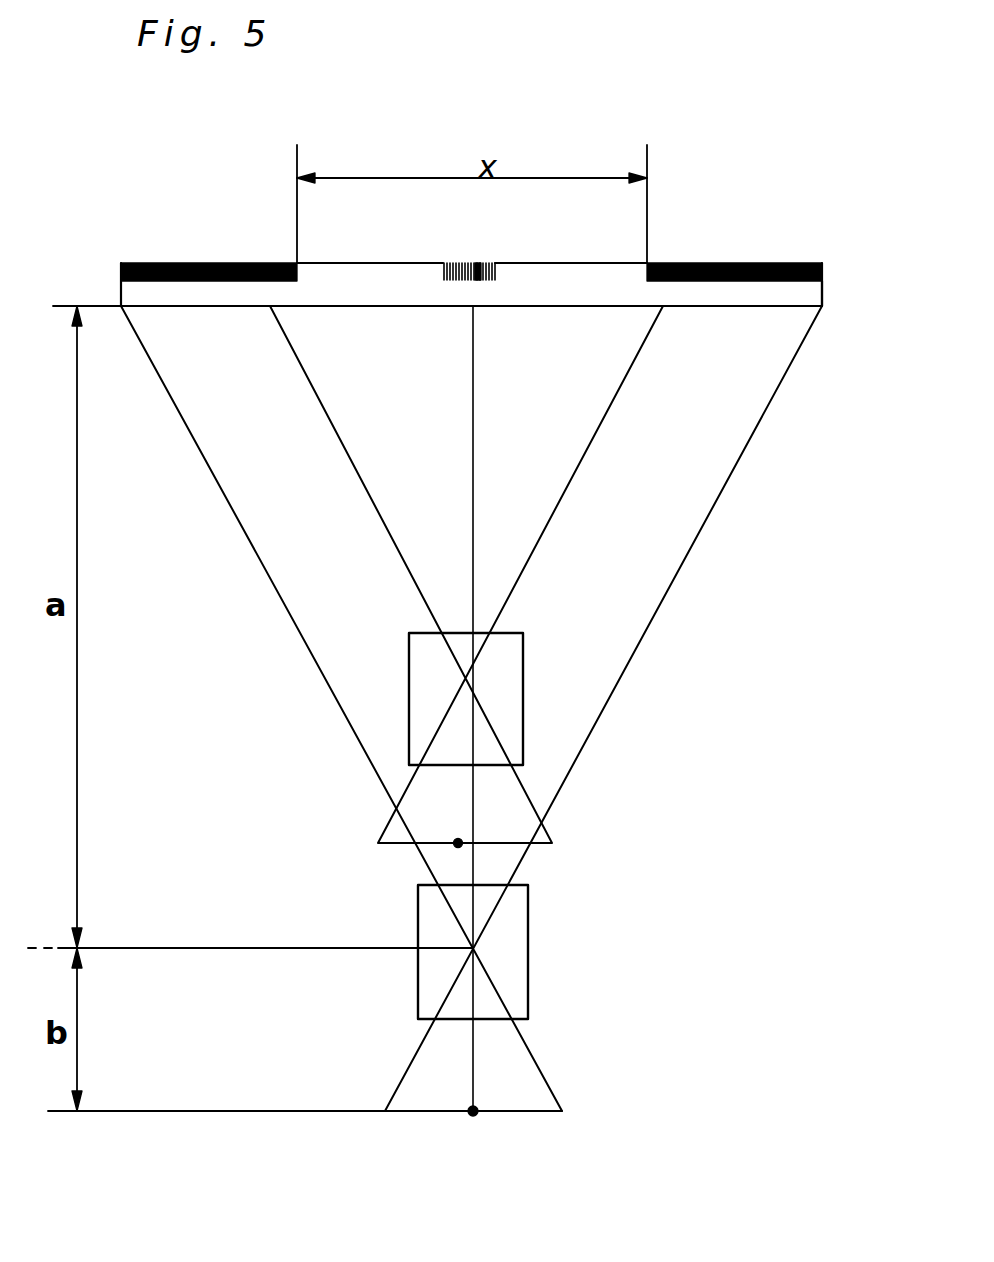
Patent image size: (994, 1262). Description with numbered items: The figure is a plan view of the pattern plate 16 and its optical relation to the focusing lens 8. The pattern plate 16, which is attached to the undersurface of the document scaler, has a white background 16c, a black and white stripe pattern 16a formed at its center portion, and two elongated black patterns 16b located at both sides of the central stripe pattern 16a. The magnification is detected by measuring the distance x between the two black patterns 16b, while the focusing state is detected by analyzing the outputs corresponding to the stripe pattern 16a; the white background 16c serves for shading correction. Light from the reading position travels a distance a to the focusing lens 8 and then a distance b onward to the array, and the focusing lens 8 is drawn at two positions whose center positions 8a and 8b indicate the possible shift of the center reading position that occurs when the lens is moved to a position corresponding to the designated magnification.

The pattern plate 16 is at (138, 233).
The stripe pattern 16a is at (477, 262).
The elongated black patterns 16b is at (213, 263).
The white background 16c is at (810, 290).
The focusing lens 8 is at (507, 680).
The center position 8a is at (473, 1111).
The center position 8b is at (458, 843).